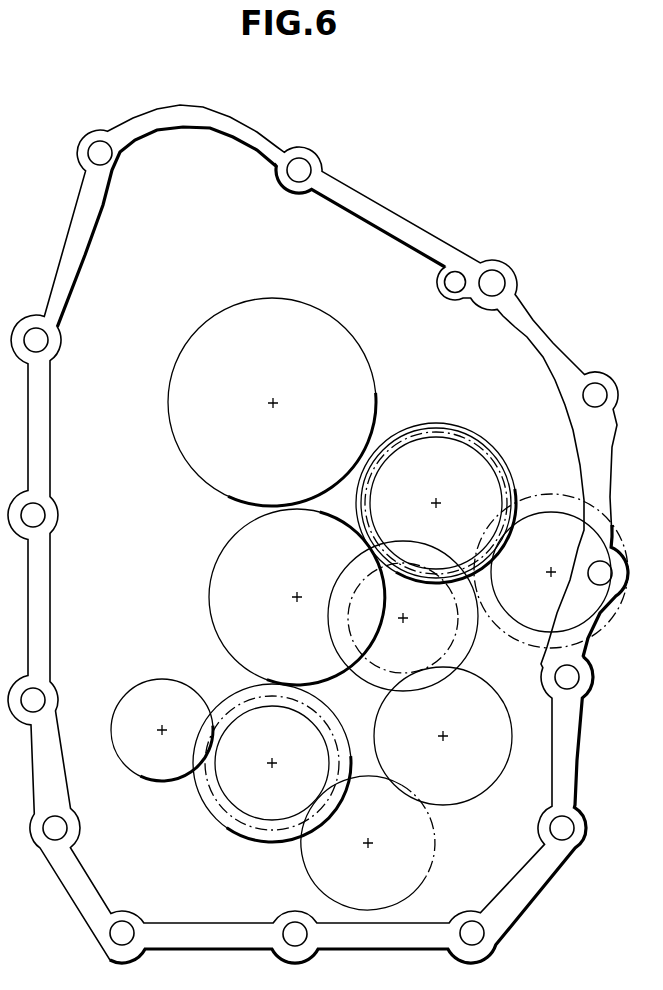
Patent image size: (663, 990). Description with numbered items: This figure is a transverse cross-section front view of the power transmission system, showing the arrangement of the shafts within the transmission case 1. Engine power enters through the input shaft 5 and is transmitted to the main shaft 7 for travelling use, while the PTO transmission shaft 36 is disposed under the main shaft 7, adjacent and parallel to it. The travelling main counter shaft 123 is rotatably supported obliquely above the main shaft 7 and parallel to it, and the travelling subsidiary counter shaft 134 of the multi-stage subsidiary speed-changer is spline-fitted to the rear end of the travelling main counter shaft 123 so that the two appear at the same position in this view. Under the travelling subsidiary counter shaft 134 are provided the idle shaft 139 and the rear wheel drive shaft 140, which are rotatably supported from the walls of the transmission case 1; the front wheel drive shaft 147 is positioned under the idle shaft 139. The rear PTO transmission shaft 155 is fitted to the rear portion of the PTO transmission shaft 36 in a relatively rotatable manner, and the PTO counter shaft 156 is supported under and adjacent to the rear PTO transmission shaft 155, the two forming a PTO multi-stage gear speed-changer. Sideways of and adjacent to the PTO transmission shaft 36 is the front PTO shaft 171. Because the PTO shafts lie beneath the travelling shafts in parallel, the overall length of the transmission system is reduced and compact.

The transmission case 1 is at (423, 238).
The input shaft 5 is at (277, 401).
The main shaft 7 is at (293, 597).
The travelling main counter shaft 123 is at (450, 487).
The travelling subsidiary counter shaft 134 is at (441, 500).
The rear wheel drive shaft 140 is at (551, 566).
The idle shaft 139 is at (407, 622).
The front wheel drive shaft 147 is at (445, 740).
The PTO counter shaft 156 is at (369, 846).
The front PTO shaft 171 is at (162, 733).
The PTO transmission shaft 36 is at (272, 780).
The rear PTO transmission shaft 155 is at (270, 765).